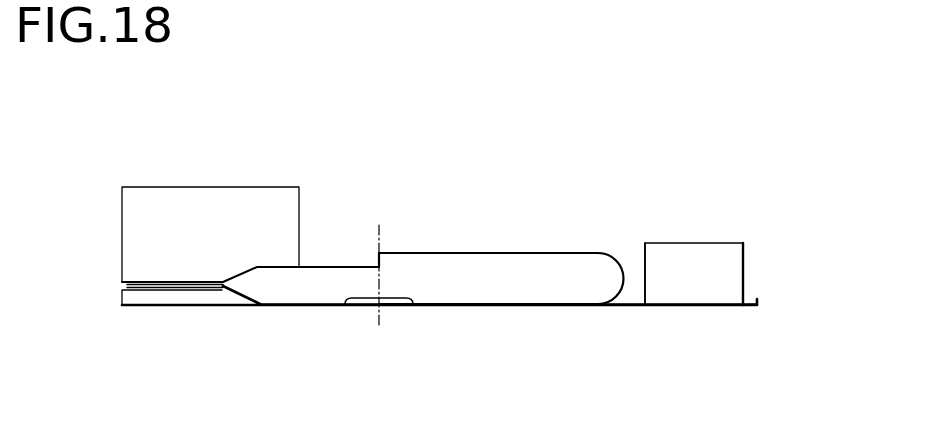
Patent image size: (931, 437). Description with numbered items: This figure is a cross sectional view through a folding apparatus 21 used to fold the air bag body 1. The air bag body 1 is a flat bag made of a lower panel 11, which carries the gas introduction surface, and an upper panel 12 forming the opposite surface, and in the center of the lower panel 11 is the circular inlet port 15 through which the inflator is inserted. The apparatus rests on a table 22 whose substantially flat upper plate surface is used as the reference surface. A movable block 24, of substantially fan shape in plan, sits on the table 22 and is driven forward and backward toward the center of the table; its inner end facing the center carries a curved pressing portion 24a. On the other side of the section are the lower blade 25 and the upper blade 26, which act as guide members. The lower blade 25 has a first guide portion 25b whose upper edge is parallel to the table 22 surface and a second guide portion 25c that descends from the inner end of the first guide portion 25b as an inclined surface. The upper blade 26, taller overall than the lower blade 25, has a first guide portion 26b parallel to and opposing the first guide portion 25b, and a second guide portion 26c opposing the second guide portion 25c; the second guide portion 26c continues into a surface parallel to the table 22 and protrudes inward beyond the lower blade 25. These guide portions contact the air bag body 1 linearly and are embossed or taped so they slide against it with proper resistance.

The air bag body 1 is at (473, 253).
The lower panel 11 is at (478, 307).
The upper panel 12 is at (410, 253).
The inlet port 15 is at (358, 305).
The folding apparatus 21 is at (134, 166).
The table 22 is at (753, 297).
The movable block 24 is at (700, 253).
The pressing portion 24a is at (645, 263).
The lower blade 25 is at (143, 297).
The first guide portion 25b is at (210, 290).
The second guide portion 25c is at (240, 293).
The upper blade 26 is at (213, 197).
The first guide portion 26b is at (165, 278).
The second guide portion 26c is at (243, 277).